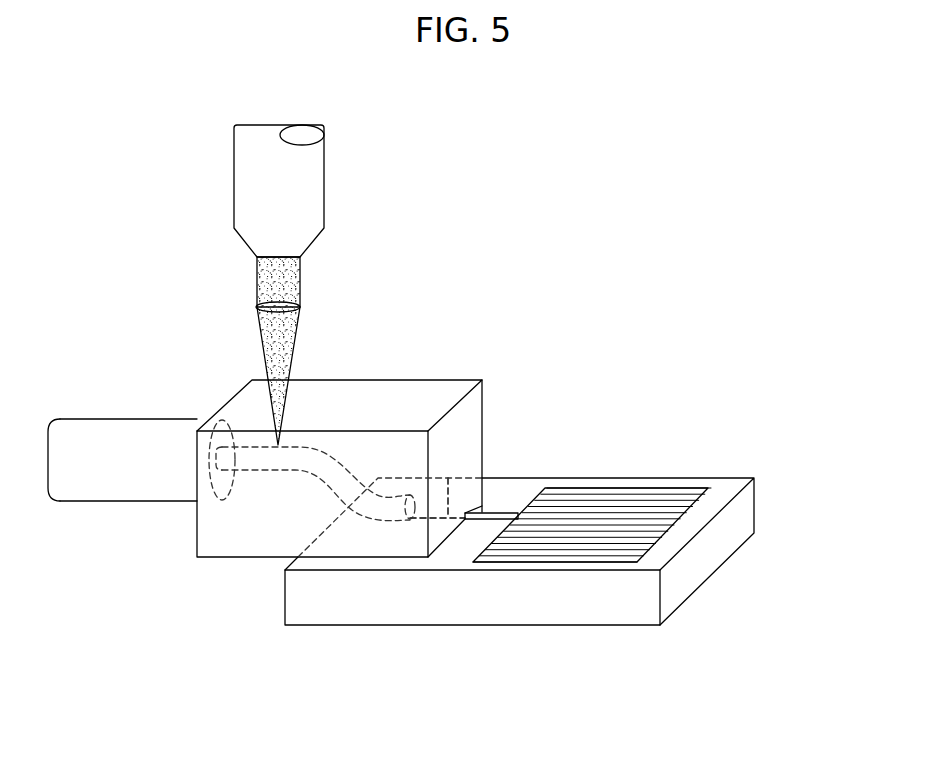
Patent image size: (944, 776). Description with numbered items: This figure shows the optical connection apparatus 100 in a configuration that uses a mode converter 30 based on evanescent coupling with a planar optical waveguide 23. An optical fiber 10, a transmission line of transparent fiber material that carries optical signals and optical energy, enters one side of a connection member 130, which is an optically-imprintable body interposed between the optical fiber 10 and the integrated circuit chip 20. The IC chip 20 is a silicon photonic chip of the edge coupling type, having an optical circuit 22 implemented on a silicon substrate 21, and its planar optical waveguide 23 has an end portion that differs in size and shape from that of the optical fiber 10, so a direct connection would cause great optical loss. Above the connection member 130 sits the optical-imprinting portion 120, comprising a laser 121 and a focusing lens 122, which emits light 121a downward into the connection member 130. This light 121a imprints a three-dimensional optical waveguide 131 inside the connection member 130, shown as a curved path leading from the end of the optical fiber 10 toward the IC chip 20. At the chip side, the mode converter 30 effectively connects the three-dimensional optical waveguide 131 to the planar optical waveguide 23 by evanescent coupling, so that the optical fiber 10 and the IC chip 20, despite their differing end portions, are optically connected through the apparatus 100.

The optical connection apparatus 100 is at (286, 413).
The optical-imprinting portion 120 is at (255, 285).
The laser 121 is at (305, 208).
The light 121a is at (265, 282).
The focusing lens 122 is at (300, 307).
The connection member 130 is at (248, 393).
The three-dimensional optical waveguide 131 is at (318, 490).
The optical fiber 10 is at (120, 470).
The mode converter 30 is at (448, 478).
The integrated circuit chip 20 is at (579, 525).
The silicon substrate 21 is at (723, 542).
The optical circuit 22 is at (642, 505).
The planar optical waveguide 23 is at (509, 511).